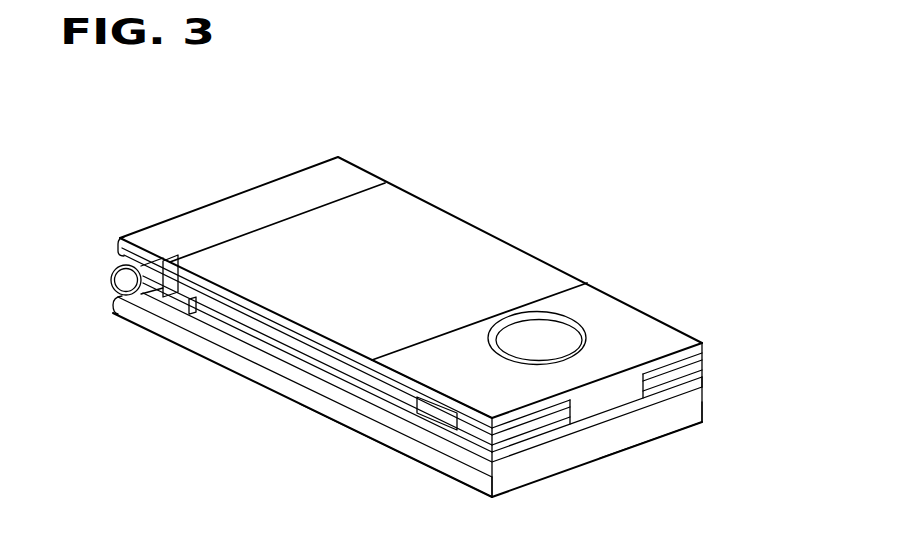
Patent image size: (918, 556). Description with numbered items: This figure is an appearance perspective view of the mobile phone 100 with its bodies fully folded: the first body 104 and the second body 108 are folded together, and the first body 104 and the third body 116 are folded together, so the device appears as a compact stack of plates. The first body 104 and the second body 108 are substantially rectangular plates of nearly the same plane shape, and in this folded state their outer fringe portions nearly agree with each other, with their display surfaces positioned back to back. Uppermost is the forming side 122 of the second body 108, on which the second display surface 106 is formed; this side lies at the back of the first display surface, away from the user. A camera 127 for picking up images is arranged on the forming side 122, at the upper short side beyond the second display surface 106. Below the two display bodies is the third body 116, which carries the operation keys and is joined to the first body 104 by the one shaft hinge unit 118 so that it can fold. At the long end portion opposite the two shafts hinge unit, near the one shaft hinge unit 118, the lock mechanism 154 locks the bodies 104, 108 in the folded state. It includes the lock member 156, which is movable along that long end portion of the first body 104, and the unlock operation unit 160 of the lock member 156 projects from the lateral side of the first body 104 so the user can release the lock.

The mobile phone 100 is at (453, 140).
The first body 104 is at (702, 379).
The second display surface 106 is at (438, 227).
The second body 108 is at (653, 331).
The third body 116 is at (674, 422).
The one shaft hinge unit 118 is at (100, 262).
The forming side 122 is at (450, 372).
The camera 127 is at (563, 317).
The lock mechanism 154 is at (171, 266).
The lock member 156 is at (132, 300).
The unlock operation unit 160 is at (168, 314).